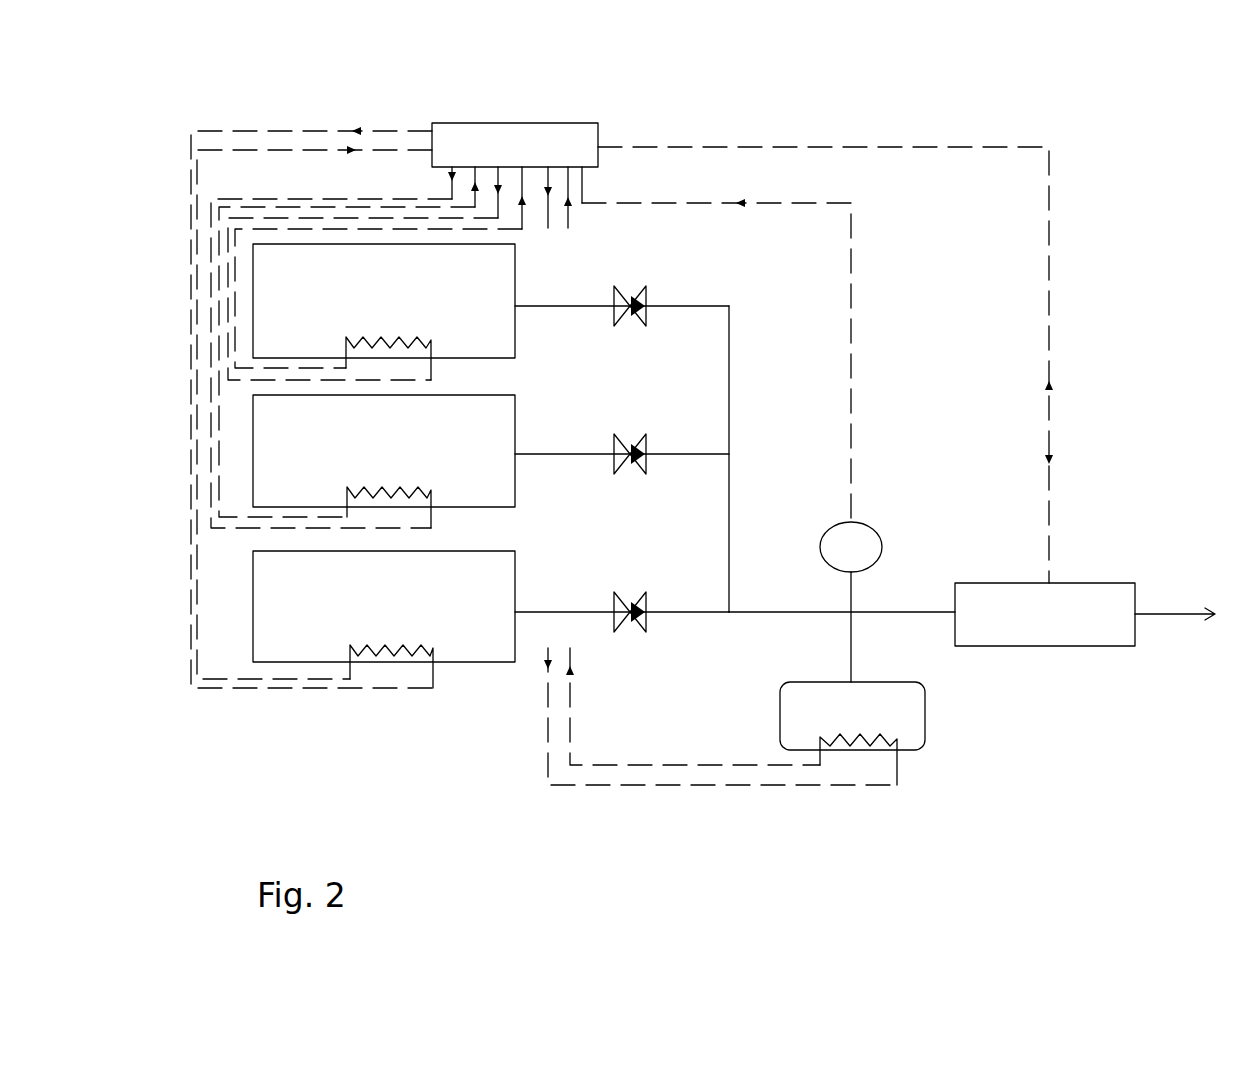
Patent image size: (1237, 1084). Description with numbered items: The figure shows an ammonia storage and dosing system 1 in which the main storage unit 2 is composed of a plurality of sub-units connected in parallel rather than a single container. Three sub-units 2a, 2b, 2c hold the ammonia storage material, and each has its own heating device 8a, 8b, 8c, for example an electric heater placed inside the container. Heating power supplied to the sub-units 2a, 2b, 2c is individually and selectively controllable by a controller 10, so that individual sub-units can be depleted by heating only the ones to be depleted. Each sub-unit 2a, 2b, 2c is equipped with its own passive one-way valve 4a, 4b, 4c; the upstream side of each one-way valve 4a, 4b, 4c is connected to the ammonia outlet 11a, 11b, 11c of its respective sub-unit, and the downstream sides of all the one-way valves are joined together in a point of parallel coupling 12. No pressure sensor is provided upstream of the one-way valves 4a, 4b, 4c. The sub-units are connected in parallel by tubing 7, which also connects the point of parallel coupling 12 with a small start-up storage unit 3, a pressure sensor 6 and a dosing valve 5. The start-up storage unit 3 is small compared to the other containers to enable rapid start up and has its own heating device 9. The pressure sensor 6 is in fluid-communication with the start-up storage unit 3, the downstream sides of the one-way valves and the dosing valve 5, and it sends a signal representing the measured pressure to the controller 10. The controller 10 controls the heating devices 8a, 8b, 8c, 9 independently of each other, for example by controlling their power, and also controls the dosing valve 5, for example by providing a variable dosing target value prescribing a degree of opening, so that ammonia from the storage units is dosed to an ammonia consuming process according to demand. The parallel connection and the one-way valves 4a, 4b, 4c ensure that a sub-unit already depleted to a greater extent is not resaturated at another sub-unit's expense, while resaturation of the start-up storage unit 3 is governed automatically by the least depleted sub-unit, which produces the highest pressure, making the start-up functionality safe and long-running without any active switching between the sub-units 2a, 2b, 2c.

The ammonia storage and dosing system 1 is at (1128, 219).
The main storage unit 2 is at (213, 738).
The sub-unit 2a is at (384, 619).
The sub-unit 2b is at (384, 461).
The sub-unit 2c is at (384, 312).
The start-up storage unit 3 is at (918, 702).
The passive one-way valve 4a is at (620, 608).
The passive one-way valve 4b is at (620, 450).
The passive one-way valve 4c is at (623, 295).
The dosing valve 5 is at (1120, 640).
The pressure sensor 6 is at (876, 532).
The tubing 7 is at (898, 612).
The heating device 8a is at (405, 650).
The heating device 8b is at (400, 490).
The heating device 8c is at (402, 342).
The heating device 9 is at (867, 740).
The controller 10 is at (577, 132).
The ammonia outlet 11a is at (518, 610).
The ammonia outlet 11b is at (518, 452).
The ammonia outlet 11c is at (518, 302).
The point of parallel coupling 12 is at (730, 610).